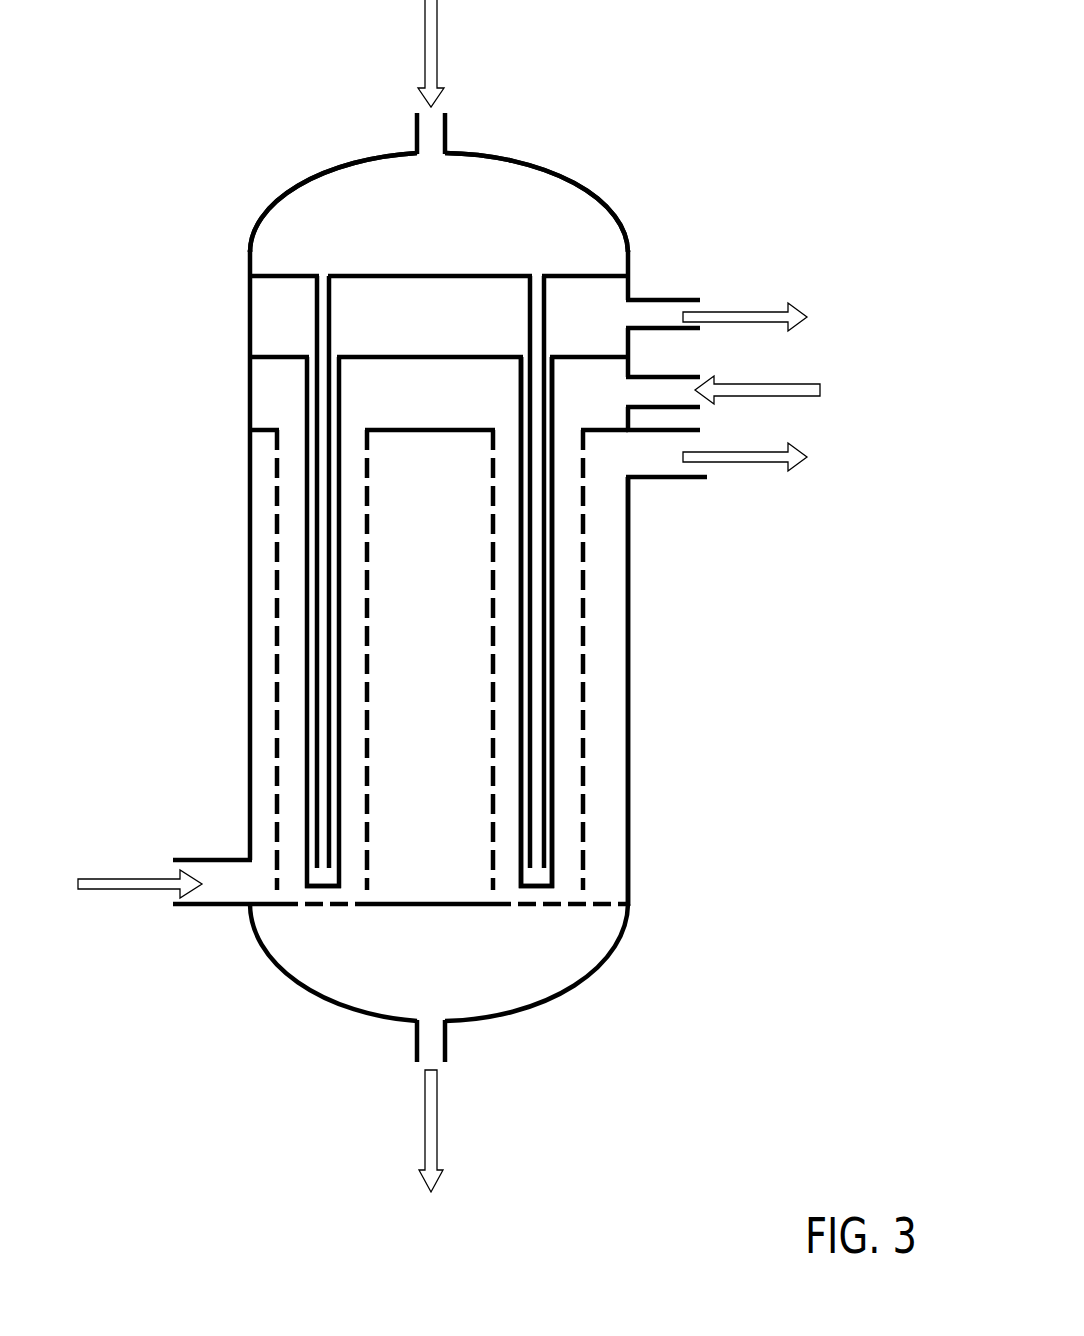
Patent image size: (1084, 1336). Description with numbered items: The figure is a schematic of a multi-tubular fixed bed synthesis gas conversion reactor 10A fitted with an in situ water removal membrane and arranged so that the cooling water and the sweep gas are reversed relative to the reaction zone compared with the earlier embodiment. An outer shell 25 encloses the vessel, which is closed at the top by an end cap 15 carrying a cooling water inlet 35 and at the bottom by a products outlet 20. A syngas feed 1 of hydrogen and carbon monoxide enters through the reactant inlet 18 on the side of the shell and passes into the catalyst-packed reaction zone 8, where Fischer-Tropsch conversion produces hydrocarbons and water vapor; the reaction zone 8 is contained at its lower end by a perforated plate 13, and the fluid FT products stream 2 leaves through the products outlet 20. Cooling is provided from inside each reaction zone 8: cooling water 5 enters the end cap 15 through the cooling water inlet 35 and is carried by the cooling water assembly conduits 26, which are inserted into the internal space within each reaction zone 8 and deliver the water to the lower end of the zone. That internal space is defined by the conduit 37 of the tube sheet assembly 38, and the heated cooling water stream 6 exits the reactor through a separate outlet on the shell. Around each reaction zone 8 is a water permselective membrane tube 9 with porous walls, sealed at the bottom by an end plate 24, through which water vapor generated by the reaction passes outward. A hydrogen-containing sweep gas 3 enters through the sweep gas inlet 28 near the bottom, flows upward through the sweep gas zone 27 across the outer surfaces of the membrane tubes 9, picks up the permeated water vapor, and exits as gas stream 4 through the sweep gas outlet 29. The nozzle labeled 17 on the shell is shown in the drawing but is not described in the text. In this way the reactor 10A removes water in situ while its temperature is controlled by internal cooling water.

The FT reactor 10A is at (690, 131).
The end cap 15 is at (268, 198).
The outer shell 25 is at (632, 812).
The cooling water inlet 35 is at (415, 131).
The products outlet 20 is at (447, 1045).
The sweep gas inlet 28 is at (188, 905).
The outlet nozzle 17 is at (690, 297).
The reactant inlet 18 is at (673, 390).
The sweep gas outlet 29 is at (690, 480).
The cooling water assembly conduits 26 is at (313, 332).
The tube sheet assembly 38 is at (278, 360).
The membrane tube 9 is at (275, 472).
The sweep gas zone 27 is at (255, 540).
The perforated plate 13 is at (555, 905).
The reaction zone 8 is at (357, 717).
The conduit 37 is at (555, 620).
The end plate 24 is at (327, 890).
The cooling water 5 is at (430, 36).
The cooling water stream 6 is at (774, 312).
The syngas feed 1 is at (793, 384).
The gas stream 4 is at (783, 452).
The sweep gas 3 is at (113, 877).
The FT products stream 2 is at (423, 1102).